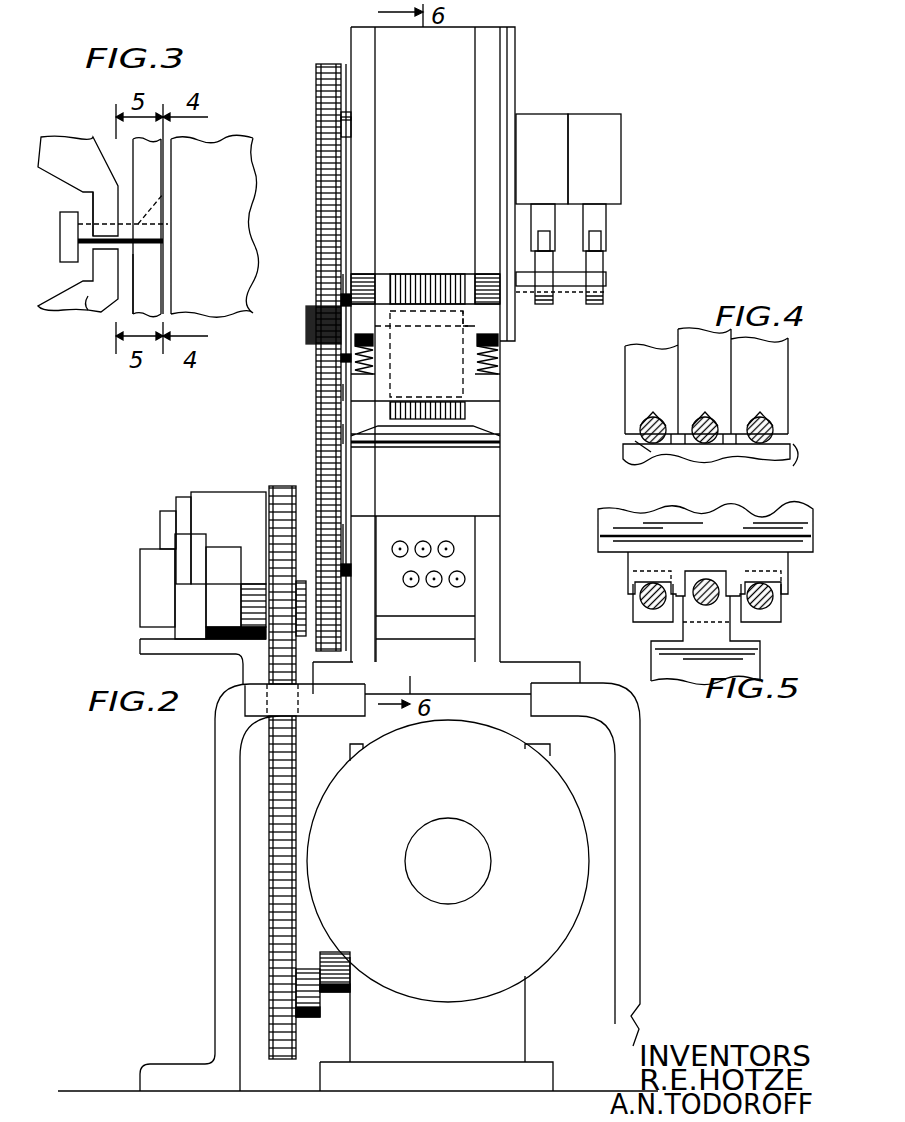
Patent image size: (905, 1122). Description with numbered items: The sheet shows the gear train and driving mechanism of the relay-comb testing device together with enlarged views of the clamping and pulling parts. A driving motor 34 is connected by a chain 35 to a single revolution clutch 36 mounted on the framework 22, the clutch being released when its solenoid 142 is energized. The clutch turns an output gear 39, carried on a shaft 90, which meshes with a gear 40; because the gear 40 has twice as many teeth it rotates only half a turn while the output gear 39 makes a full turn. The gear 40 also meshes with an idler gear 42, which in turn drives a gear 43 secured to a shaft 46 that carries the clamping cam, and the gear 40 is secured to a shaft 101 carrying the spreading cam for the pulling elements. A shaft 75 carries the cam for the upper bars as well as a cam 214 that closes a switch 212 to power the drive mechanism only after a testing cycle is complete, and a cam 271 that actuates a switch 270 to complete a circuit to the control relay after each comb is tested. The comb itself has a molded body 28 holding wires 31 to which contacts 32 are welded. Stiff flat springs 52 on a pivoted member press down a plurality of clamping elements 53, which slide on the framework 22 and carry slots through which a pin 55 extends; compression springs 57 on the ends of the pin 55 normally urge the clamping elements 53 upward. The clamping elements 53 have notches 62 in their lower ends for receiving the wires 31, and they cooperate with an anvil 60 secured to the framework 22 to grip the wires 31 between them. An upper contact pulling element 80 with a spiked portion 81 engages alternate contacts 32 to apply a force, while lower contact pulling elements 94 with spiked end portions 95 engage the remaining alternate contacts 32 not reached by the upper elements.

In FIG. 2, the framework 22 is at (480, 550).
In FIG. 3, the molded body 28 is at (232, 150).
In FIG. 3, the wires 31 is at (160, 237).
In FIG. 4, the wires 31 is at (640, 440).
In FIG. 5, the wires 31 is at (632, 594).
In FIG. 3, the contacts 32 is at (62, 222).
In FIG. 4, the contacts 32 is at (632, 437).
In FIG. 5, the contacts 32 is at (630, 612).
In FIG. 2, the driving motor 34 is at (555, 878).
In FIG. 2, the chain 35 is at (266, 790).
In FIG. 2, the single revolution clutch 36 is at (205, 500).
In FIG. 2, the output gear 39 is at (335, 626).
In FIG. 2, the gear 40 is at (318, 430).
In FIG. 2, the idler gear 42 is at (318, 258).
In FIG. 2, the gear 43 is at (313, 82).
In FIG. 2, the shaft 46 is at (342, 118).
In FIG. 2, the stiff flat springs 52 is at (446, 270).
In FIG. 2, the clamping elements 53 is at (462, 406).
In FIG. 3, the clamping elements 53 is at (145, 165).
In FIG. 4, the clamping elements 53 is at (748, 352).
In FIG. 2, the pin 55 is at (490, 326).
In FIG. 2, the compression springs 57 is at (350, 352).
In FIG. 2, the anvil 60 is at (470, 432).
In FIG. 3, the anvil 60 is at (142, 286).
In FIG. 4, the anvil 60 is at (688, 450).
In FIG. 3, the notches 62 is at (172, 190).
In FIG. 4, the notches 62 is at (760, 412).
In FIG. 2, the shaft 75 is at (352, 276).
In FIG. 3, the upper contact pulling element 80 is at (48, 133).
In FIG. 5, the upper contact pulling element 80 is at (640, 522).
In FIG. 3, the spiked portion 81 is at (100, 178).
In FIG. 5, the spiked portion 81 is at (635, 562).
In FIG. 2, the shaft 90 is at (310, 558).
In FIG. 3, the lower contact pulling elements 94 is at (52, 310).
In FIG. 5, the lower contact pulling elements 94 is at (678, 668).
In FIG. 3, the spiked end portions 95 is at (100, 262).
In FIG. 5, the spiked end portions 95 is at (680, 628).
In FIG. 2, the shaft 101 is at (345, 388).
In FIG. 2, the solenoid 142 is at (140, 568).
In FIG. 2, the switch 212 is at (600, 120).
In FIG. 2, the cam 214 is at (603, 286).
In FIG. 2, the switch 270 is at (548, 125).
In FIG. 2, the cam 271 is at (548, 306).